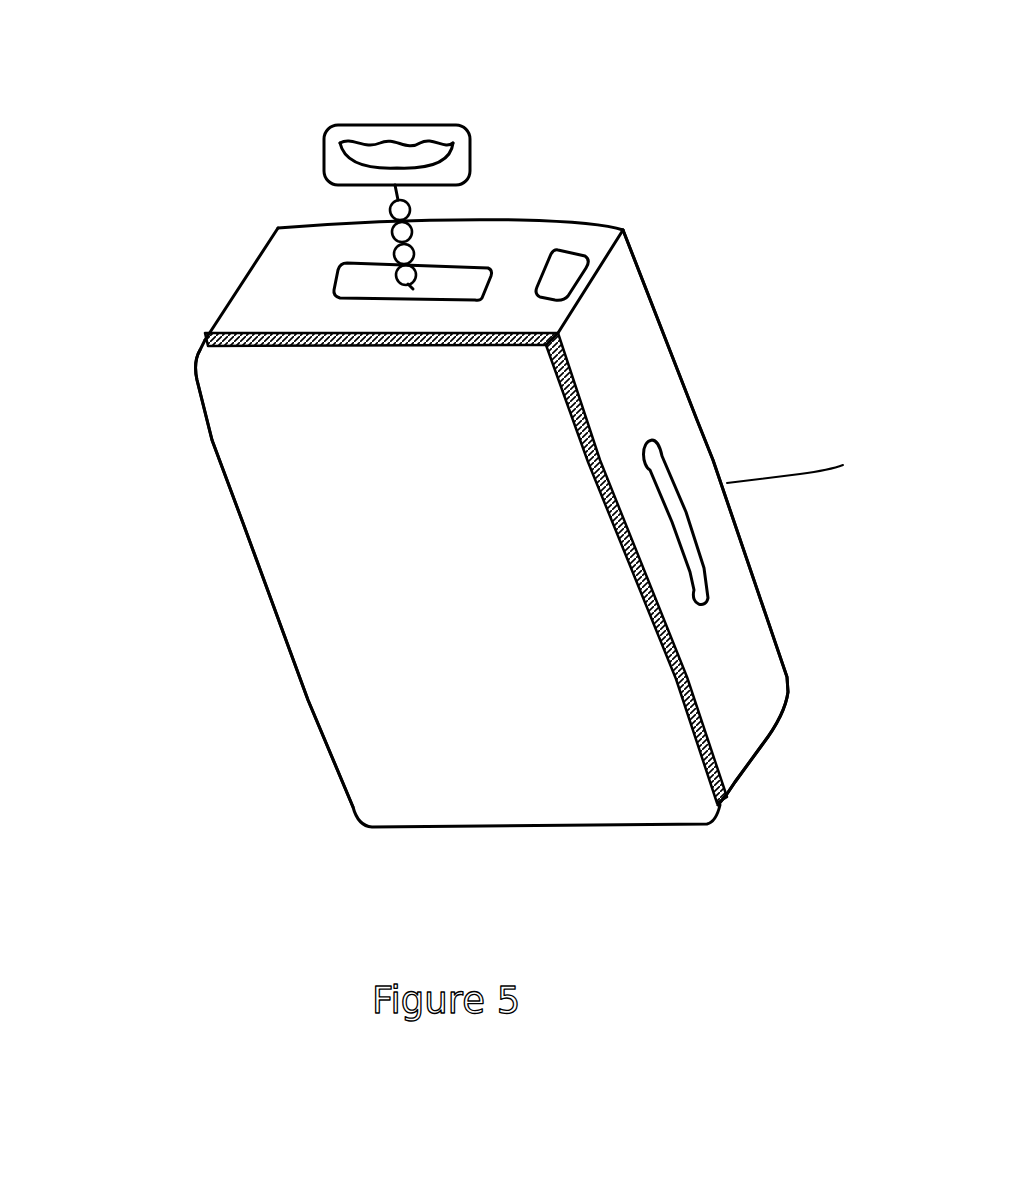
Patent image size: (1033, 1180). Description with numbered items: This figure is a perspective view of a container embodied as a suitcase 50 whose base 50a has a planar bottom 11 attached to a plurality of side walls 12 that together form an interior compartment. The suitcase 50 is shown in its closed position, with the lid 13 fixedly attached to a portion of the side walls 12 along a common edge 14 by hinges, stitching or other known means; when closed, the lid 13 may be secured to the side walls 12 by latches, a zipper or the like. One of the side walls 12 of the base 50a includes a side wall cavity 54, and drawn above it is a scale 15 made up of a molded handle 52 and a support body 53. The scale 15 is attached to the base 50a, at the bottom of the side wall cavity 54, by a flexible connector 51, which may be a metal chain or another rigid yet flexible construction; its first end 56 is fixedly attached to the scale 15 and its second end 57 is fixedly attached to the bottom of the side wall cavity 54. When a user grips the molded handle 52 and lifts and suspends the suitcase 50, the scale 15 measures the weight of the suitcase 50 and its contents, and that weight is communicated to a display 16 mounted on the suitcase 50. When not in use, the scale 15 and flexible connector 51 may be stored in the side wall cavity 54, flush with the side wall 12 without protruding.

The planar bottom 11 is at (753, 570).
The side walls 12 is at (630, 405).
The lid 13 is at (450, 763).
The common edge 14 is at (243, 523).
The scale 15 is at (419, 94).
The display 16 is at (565, 255).
The suitcase 50 is at (798, 436).
The base 50a is at (824, 475).
The flexible connector 51 is at (392, 233).
The molded handle 52 is at (432, 130).
The support body 53 is at (437, 168).
The side wall cavity 54 is at (357, 280).
The first end 56 is at (373, 195).
The second end 57 is at (413, 287).